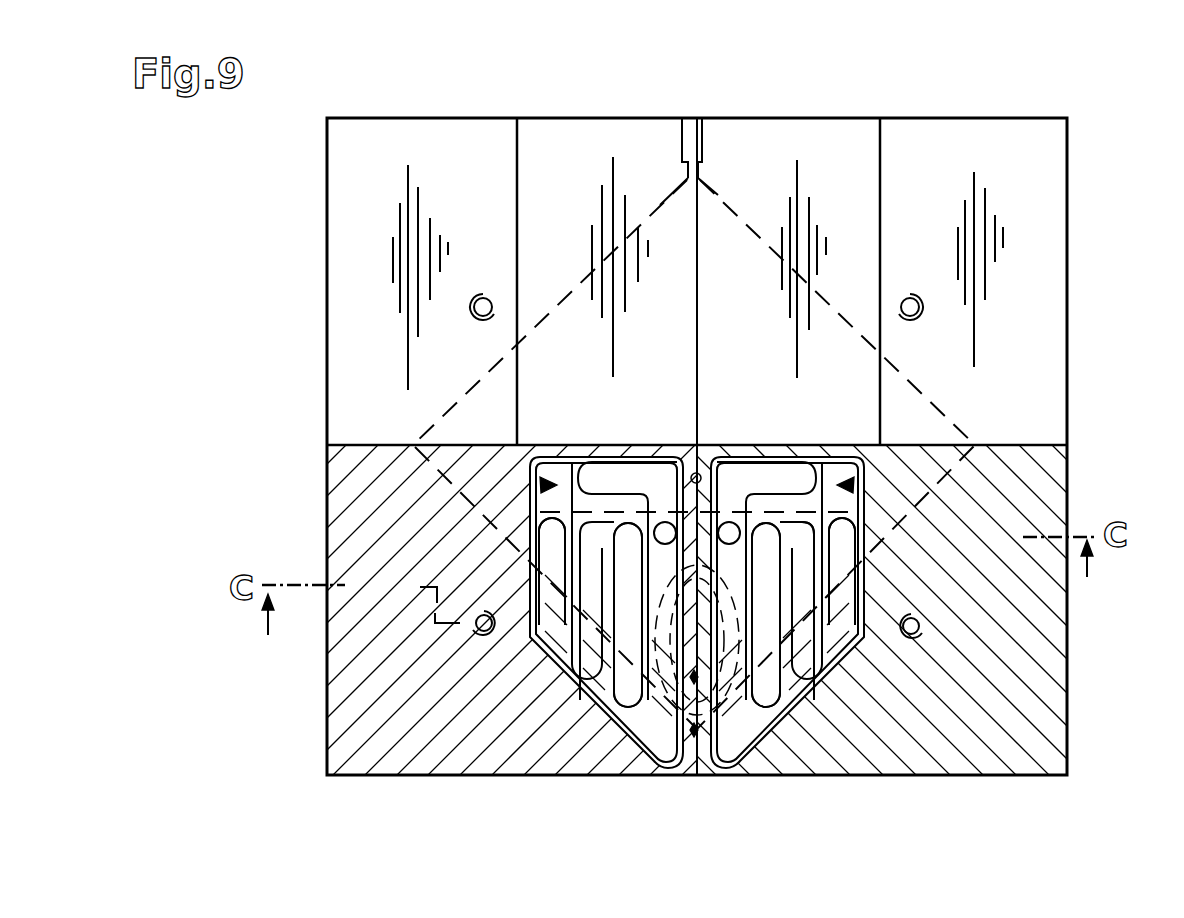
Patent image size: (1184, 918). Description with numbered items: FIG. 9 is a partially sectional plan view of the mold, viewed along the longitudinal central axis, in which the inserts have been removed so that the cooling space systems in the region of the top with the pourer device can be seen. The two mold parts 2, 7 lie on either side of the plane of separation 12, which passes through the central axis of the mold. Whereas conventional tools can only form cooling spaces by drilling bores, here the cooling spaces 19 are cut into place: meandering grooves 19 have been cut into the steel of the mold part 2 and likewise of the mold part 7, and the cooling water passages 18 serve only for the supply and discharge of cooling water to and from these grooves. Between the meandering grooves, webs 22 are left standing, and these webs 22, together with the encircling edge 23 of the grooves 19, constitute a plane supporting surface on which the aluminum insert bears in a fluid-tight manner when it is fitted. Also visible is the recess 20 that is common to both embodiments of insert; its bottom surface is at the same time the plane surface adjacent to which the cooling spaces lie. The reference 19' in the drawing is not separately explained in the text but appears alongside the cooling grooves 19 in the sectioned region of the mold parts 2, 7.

The mold part 2 is at (372, 745).
The mold part 7 is at (953, 735).
The plane of separation 12 is at (697, 240).
The cooling water passages 18 is at (545, 485).
The cooling spaces 19 is at (691, 652).
The cavity wall 19' is at (875, 689).
The recess 20 is at (787, 712).
The webs 22 is at (823, 585).
The encircling edge 23 is at (867, 502).